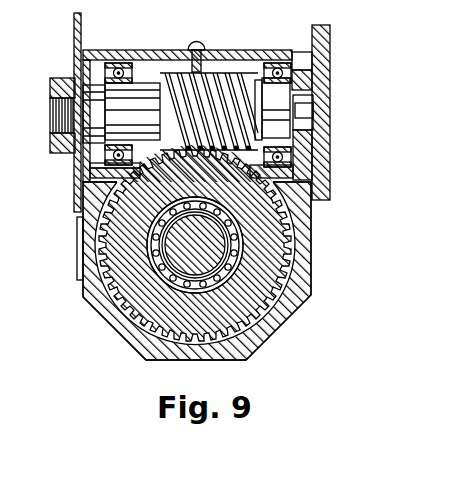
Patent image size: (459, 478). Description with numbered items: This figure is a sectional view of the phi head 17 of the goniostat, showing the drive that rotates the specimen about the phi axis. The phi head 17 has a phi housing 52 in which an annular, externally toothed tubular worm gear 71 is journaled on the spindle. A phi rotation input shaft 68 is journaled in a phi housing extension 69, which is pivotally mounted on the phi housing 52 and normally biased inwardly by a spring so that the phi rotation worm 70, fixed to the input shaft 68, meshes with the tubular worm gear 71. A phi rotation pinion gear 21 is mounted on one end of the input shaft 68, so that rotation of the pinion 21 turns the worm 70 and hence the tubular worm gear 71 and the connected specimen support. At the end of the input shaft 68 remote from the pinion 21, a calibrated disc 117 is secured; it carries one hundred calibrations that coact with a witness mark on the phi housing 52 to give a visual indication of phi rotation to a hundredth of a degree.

The phi head 17 is at (306, 312).
The phi rotation pinion gear 21 is at (330, 46).
The phi housing 52 is at (110, 325).
The phi rotation input shaft 68 is at (314, 105).
The phi housing extension 69 is at (243, 52).
The phi rotation worm 70 is at (171, 75).
The tubular worm gear 71 is at (115, 236).
The calibrated disc 117 is at (74, 27).